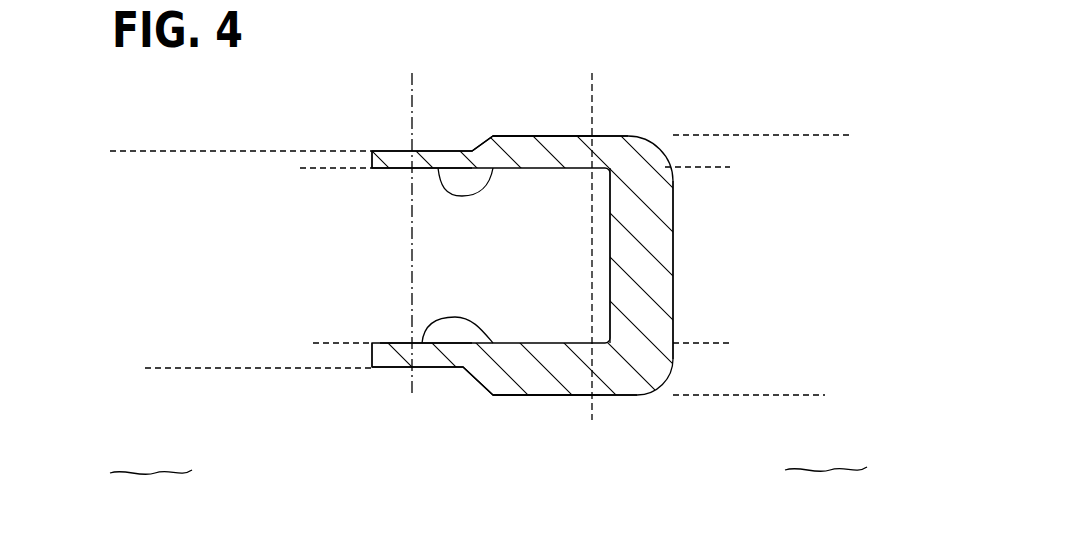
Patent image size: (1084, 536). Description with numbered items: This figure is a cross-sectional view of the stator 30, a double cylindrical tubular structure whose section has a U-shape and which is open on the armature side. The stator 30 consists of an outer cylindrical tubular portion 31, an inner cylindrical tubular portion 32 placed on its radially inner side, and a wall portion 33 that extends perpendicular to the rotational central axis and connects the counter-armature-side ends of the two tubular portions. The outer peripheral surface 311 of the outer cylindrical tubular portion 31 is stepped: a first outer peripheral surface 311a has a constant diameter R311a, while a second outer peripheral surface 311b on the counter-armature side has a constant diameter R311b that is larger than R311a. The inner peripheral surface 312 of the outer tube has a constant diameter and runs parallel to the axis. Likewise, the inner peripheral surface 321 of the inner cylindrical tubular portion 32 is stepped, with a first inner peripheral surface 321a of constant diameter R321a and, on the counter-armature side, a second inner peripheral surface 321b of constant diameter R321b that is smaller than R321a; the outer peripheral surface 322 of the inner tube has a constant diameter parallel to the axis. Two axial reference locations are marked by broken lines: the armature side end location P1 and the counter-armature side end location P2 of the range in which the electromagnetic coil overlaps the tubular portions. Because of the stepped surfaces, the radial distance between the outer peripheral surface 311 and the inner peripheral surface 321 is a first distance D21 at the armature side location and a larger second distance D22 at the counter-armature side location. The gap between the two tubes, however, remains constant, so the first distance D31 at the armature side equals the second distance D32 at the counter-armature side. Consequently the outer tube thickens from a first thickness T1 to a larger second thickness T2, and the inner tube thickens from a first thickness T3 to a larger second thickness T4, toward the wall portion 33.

The stator 30 is at (634, 134).
The outer cylindrical tubular portion 31 is at (613, 136).
The inner cylindrical tubular portion 32 is at (563, 396).
The wall portion 33 is at (668, 137).
The outer peripheral surface 311 is at (585, 63).
The first outer peripheral surface 311a is at (468, 149).
The second outer peripheral surface 311b is at (547, 136).
The inner peripheral surface 312 is at (444, 151).
The inner peripheral surface 321 is at (565, 472).
The first inner peripheral surface 321a is at (452, 368).
The second inner peripheral surface 321b is at (531, 396).
The outer peripheral surface 322 is at (421, 346).
The armature side end location P1 is at (412, 396).
The counter-armature side end location P2 is at (592, 410).
The diameter of first outer peripheral surface R311a is at (132, 151).
The diameter of second outer peripheral surface R311b is at (833, 135).
The diameter of first inner peripheral surface R321a is at (158, 368).
The diameter of second inner peripheral surface R321b is at (807, 395).
The first distance D21 is at (261, 151).
The second distance D22 is at (775, 135).
The first distance D31 is at (352, 168).
The second distance D32 is at (689, 167).
The first thickness T1 is at (332, 130).
The second thickness T2 is at (709, 110).
The first thickness T3 is at (332, 312).
The second thickness T4 is at (709, 310).